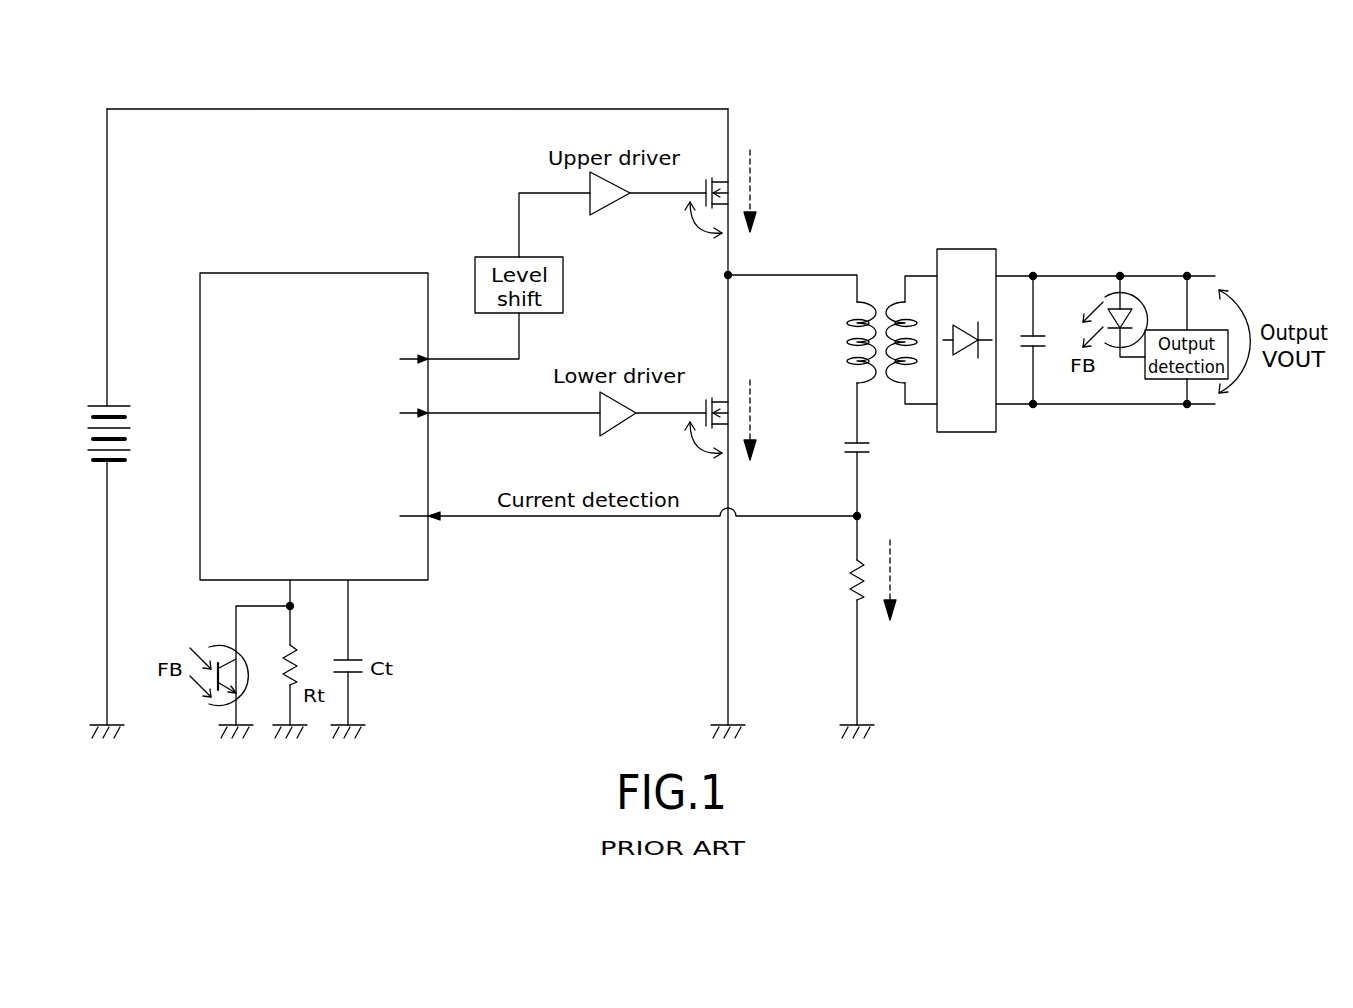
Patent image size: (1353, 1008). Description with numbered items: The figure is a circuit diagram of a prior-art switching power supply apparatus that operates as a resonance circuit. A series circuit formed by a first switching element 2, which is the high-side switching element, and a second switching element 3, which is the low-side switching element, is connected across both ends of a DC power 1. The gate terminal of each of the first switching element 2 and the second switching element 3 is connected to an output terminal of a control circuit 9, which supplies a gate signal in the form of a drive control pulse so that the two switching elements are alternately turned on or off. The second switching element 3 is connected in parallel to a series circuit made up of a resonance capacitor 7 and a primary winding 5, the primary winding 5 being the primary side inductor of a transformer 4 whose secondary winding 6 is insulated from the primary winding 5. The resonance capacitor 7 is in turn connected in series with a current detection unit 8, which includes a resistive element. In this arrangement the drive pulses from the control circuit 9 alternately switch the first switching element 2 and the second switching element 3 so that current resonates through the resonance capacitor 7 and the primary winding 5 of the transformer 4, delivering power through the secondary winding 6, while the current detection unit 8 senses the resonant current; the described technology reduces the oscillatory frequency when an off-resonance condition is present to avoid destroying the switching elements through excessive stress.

The DC power 1 is at (82, 425).
The first switching element 2 is at (714, 197).
The second switching element 3 is at (714, 415).
The transformer 4 is at (880, 323).
The primary winding 5 is at (852, 342).
The secondary winding 6 is at (909, 342).
The resonance capacitor 7 is at (866, 450).
The current detection unit 8 is at (874, 580).
The control circuit 9 is at (318, 273).